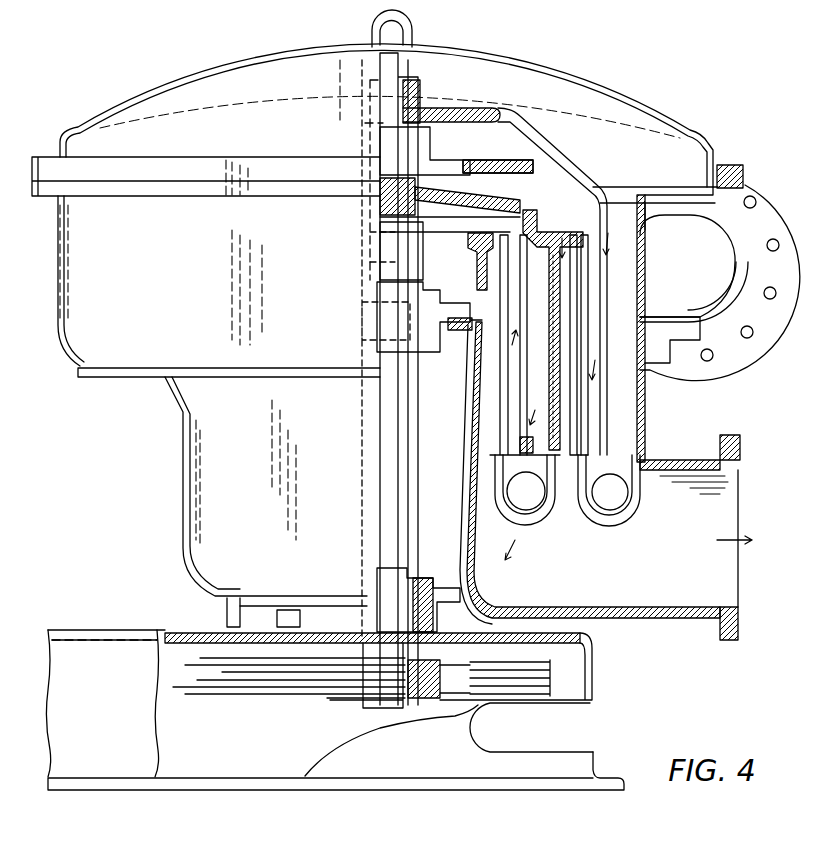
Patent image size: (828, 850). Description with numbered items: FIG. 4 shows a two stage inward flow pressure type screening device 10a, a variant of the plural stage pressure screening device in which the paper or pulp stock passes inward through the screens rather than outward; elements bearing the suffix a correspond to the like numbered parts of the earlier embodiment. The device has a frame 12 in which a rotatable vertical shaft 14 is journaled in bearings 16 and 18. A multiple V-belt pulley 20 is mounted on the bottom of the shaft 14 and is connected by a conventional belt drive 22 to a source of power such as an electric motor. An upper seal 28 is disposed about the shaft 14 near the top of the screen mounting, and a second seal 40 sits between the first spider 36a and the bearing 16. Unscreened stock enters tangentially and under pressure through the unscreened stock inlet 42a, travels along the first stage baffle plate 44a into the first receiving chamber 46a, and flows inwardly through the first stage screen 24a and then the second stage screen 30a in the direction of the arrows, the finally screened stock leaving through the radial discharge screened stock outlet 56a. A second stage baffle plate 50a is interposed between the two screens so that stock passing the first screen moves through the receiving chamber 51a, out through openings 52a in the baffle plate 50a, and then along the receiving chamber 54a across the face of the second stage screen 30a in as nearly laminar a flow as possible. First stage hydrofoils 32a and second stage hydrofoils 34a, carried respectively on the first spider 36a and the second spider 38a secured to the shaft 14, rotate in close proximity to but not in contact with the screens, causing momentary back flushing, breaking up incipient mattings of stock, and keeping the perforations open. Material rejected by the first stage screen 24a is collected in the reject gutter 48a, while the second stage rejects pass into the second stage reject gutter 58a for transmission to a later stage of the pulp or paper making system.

The cover 10a is at (668, 106).
The frame 12 is at (594, 680).
The rotatable vertical shaft 14 is at (402, 498).
The bearing 16 is at (378, 314).
The bearing 18 is at (376, 575).
The multiple V-belt pulley 20 is at (434, 703).
The belt drive 22 is at (245, 688).
The first stage screen 24a is at (590, 378).
The upper seal 28 is at (368, 140).
The second stage screen 30a is at (505, 393).
The first stage hydrofoils 32a is at (594, 189).
The second stage hydrofoils 34a is at (492, 284).
The support arm 36a is at (425, 200).
The casing wall 38a is at (558, 163).
The second seal 40 is at (370, 258).
The tangential unscreened stock inlet 42a is at (725, 268).
The outer wall 44a is at (640, 272).
The bottom plate 46a is at (626, 452).
The bearing 48a is at (626, 496).
The second stage baffle plate 50a is at (550, 412).
The baffle plate 51a is at (575, 306).
The mounting bracket 52a is at (577, 240).
The partition 54a is at (534, 372).
The radial discharge screened stock outlet 56a is at (703, 586).
The bearing 58a is at (540, 508).